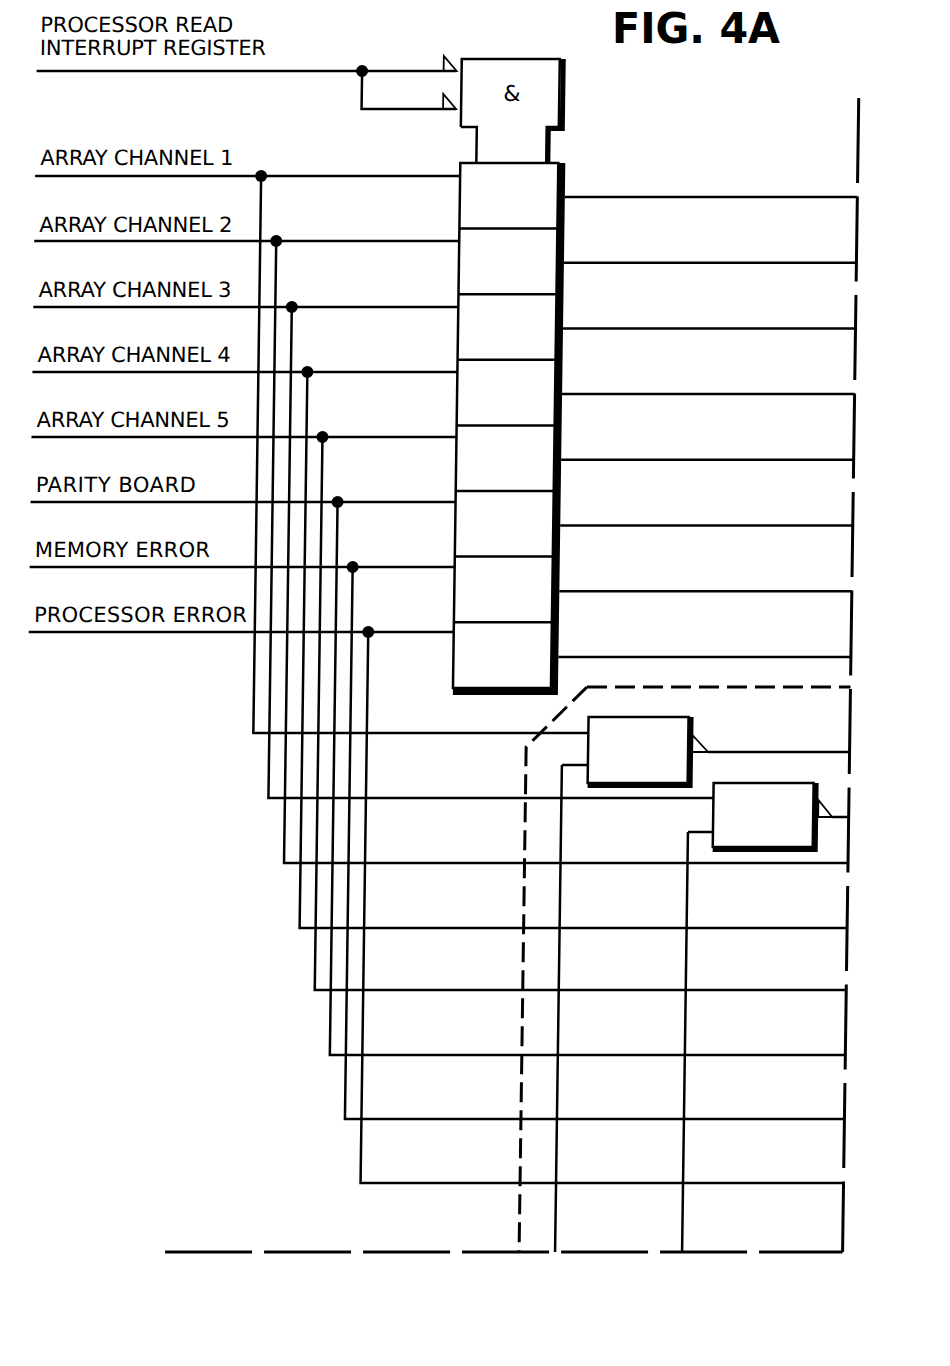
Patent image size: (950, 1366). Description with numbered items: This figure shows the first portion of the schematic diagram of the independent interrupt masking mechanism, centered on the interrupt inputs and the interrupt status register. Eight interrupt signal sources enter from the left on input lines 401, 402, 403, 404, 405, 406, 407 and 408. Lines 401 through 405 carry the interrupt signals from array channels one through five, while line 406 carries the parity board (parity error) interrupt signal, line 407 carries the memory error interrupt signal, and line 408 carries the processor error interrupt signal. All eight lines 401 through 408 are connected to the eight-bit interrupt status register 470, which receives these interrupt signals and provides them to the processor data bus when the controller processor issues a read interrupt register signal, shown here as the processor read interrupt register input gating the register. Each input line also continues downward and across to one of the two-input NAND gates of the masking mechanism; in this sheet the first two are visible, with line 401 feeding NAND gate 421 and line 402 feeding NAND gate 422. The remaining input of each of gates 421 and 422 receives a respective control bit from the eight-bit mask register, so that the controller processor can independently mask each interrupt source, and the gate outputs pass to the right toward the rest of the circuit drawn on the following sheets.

The input line 401 is at (310, 174).
The input line 402 is at (302, 239).
The input line 403 is at (299, 305).
The input line 404 is at (316, 370).
The input line 405 is at (335, 435).
The input line 406 is at (345, 500).
The input line 407 is at (421, 566).
The input line 408 is at (423, 633).
The interrupt status register 470 is at (561, 165).
The two-input NAND gate 421 is at (702, 718).
The two-input NAND gate 422 is at (718, 827).